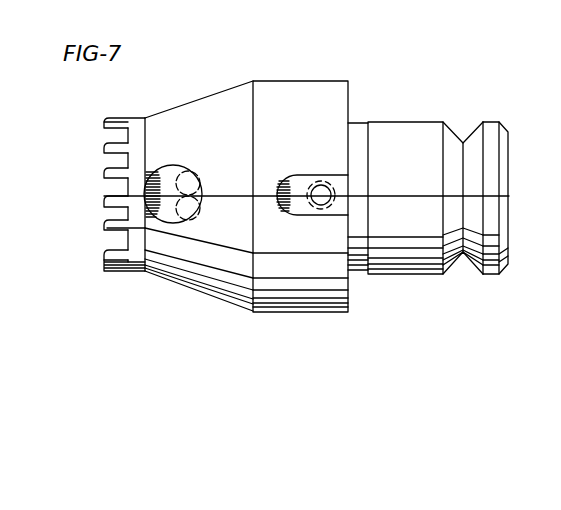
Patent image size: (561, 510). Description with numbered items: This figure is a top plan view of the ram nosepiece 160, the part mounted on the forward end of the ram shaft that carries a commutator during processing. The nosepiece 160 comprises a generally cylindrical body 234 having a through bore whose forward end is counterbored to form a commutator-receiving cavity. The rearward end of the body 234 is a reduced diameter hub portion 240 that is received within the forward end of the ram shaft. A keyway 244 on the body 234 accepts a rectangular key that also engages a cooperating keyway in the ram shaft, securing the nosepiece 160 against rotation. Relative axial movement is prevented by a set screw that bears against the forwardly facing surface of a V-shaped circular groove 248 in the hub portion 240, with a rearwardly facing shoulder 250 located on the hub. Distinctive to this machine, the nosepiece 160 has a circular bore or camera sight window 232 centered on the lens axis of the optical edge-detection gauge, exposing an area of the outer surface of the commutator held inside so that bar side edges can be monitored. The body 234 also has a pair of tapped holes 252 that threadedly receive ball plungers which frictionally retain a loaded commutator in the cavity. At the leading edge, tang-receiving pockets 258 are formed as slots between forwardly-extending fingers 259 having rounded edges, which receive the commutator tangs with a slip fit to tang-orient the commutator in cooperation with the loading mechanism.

The ram nosepiece 160 is at (240, 77).
The body 234 is at (303, 80).
The shoulder 250 is at (349, 97).
The hub portion 240 is at (421, 122).
The V-shaped circular groove 248 is at (455, 262).
The keyway 244 is at (304, 188).
The tapped holes 252 is at (198, 205).
The camera sight window 232 is at (173, 165).
The tang-receiving pockets 258 is at (107, 170).
The fingers 259 is at (115, 234).